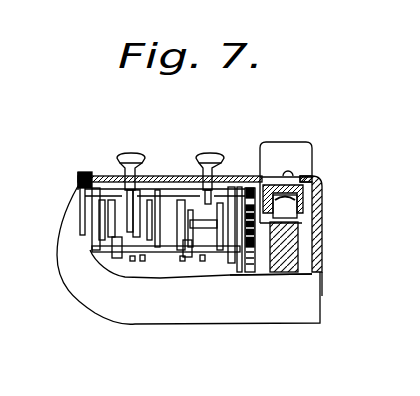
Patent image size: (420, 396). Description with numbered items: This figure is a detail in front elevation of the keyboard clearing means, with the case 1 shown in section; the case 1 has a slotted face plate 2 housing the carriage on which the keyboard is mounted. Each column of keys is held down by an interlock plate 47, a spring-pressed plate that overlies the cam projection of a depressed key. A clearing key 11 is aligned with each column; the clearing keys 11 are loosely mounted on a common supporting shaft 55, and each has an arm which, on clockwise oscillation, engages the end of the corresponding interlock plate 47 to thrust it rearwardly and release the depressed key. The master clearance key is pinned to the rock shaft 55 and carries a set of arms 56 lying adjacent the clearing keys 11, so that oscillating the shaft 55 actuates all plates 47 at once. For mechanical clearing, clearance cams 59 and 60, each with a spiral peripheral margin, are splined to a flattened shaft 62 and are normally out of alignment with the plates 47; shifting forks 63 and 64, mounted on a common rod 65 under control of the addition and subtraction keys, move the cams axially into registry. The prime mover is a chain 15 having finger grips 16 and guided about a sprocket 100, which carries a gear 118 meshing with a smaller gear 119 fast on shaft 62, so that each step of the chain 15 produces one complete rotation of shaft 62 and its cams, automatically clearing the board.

The case 1 is at (308, 312).
The slotted face plate 2 is at (243, 176).
The clearing key 11 is at (128, 154).
The chain 15 is at (302, 197).
The finger grips 16 is at (305, 155).
The interlock plate 47 is at (118, 224).
The supporting shaft 55 is at (95, 200).
The arms 56 is at (140, 200).
The clearance cam 59 is at (170, 200).
The clearance cam 60 is at (117, 207).
The flattened shaft 62 is at (190, 255).
The shifting fork 63 is at (100, 253).
The shifting fork 64 is at (140, 260).
The rod 65 is at (125, 260).
The sprocket 100 is at (297, 248).
The gear 118 is at (258, 278).
The gear 119 is at (254, 250).